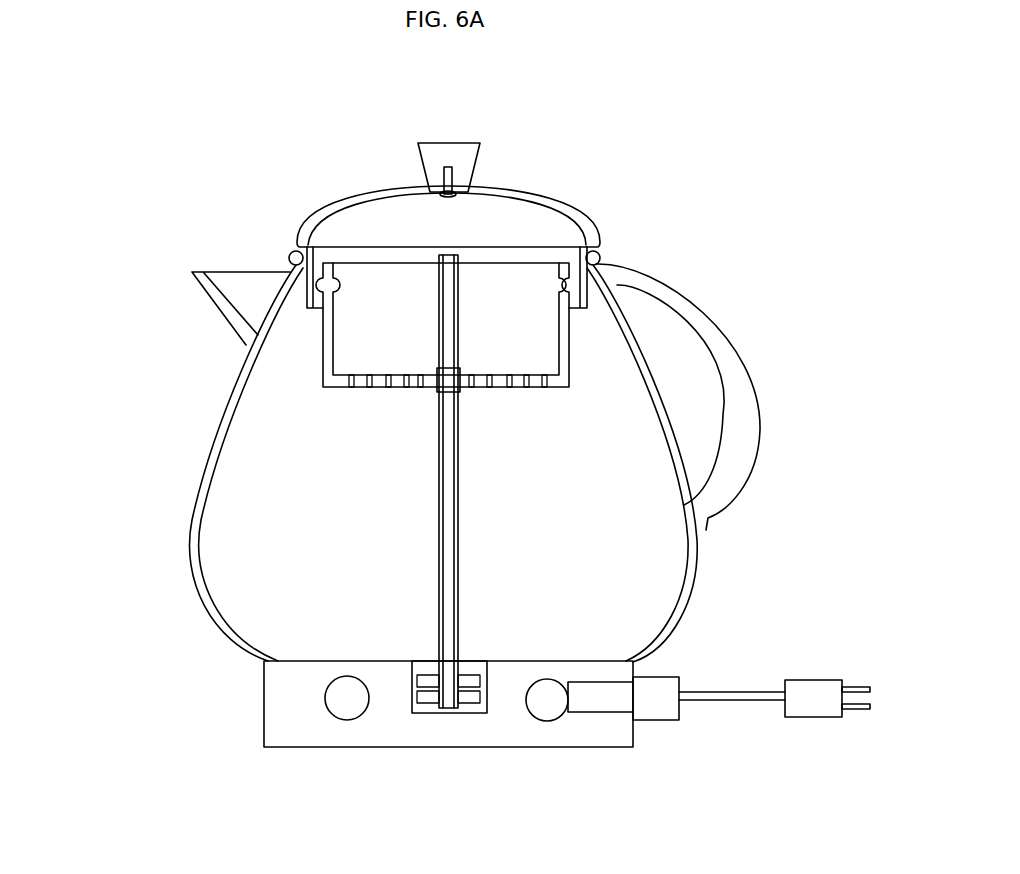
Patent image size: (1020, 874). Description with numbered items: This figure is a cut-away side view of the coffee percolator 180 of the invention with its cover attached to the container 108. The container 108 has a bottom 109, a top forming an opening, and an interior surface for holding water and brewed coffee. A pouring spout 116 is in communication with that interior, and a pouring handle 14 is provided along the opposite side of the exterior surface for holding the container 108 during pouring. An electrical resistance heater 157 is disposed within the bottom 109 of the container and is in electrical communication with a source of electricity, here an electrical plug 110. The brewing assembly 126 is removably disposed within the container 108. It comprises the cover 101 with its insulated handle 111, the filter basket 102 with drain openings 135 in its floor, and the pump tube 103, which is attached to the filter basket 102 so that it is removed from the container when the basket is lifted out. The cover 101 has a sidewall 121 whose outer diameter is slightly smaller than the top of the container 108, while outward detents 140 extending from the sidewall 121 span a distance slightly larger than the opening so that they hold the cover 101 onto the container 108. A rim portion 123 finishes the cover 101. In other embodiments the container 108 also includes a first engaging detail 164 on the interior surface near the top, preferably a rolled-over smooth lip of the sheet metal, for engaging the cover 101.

The handle 14 is at (740, 422).
The cover 101 is at (370, 220).
The filter basket 102 is at (325, 372).
The pump tube 103 is at (458, 548).
The container 108 is at (205, 562).
The bottom 109 is at (505, 725).
The electrical plug 110 is at (797, 700).
The insulated handle 111 is at (463, 152).
The pouring spout 116 is at (200, 290).
The sidewall 121 is at (607, 298).
The lid rim 123 is at (580, 180).
The brewing assembly 126 is at (380, 473).
The basket drain slots 135 is at (380, 390).
The outward detents 140 is at (598, 263).
The electrical resistance heater 157 is at (343, 708).
The first engaging detail 164 is at (296, 258).
The coffee percolator 180 is at (390, 158).